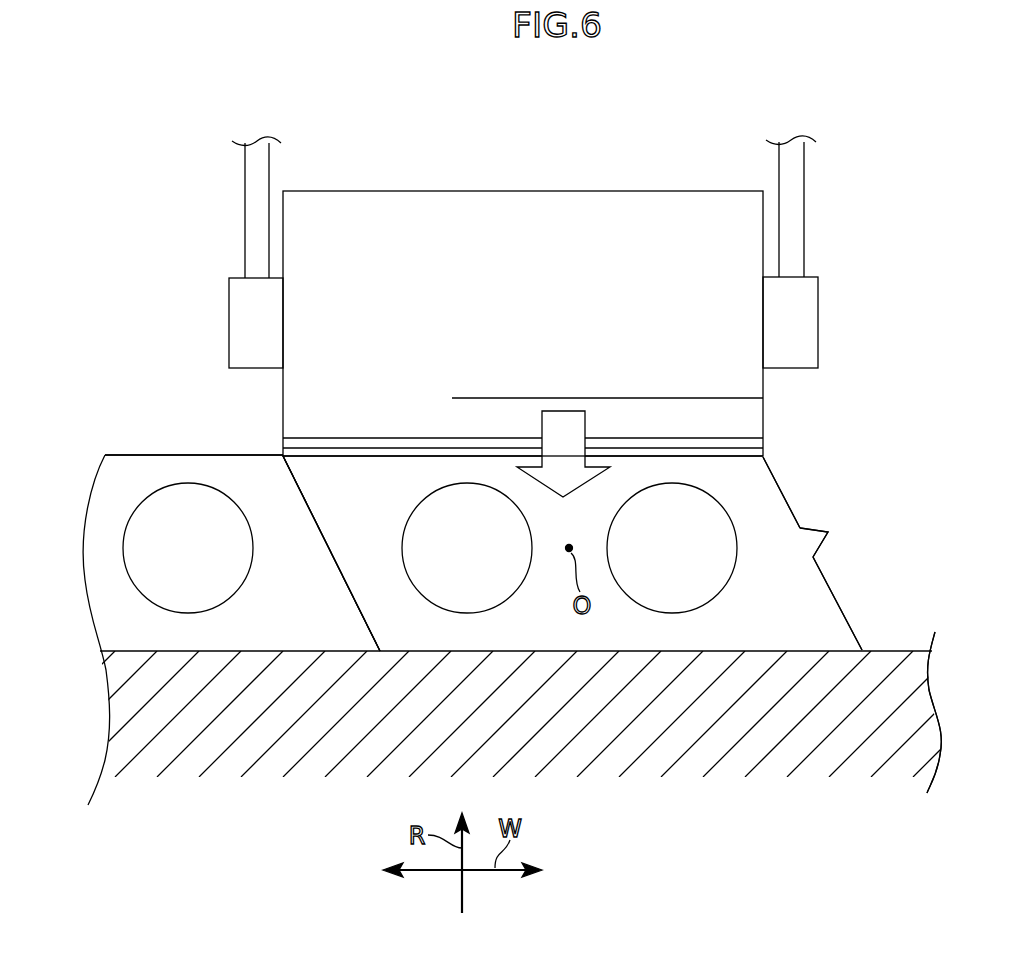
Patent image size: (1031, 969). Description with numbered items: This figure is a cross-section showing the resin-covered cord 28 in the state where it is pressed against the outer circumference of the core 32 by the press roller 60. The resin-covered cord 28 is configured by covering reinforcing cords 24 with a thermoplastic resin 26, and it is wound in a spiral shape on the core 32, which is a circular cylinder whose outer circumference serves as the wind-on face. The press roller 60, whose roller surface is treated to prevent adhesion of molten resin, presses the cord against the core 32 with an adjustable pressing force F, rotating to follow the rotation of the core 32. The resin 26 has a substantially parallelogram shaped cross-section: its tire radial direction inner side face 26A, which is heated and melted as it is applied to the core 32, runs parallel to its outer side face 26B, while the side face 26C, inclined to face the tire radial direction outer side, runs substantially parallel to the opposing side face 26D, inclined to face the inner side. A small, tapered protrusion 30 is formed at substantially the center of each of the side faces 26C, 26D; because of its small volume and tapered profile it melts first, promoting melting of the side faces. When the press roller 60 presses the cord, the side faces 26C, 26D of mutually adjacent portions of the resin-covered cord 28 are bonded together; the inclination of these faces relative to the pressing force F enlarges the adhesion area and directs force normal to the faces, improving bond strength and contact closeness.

The press roller 60 is at (485, 191).
The thermoplastic resin 26 is at (228, 453).
The inner side face 26A is at (528, 652).
The outer side face 26B is at (430, 456).
The side face 26C is at (335, 547).
The side face 26D is at (330, 550).
The reinforcing cords 24 is at (190, 483).
The resin-covered cord 28 is at (125, 425).
The protrusion 30 is at (817, 525).
The core 32 is at (908, 650).